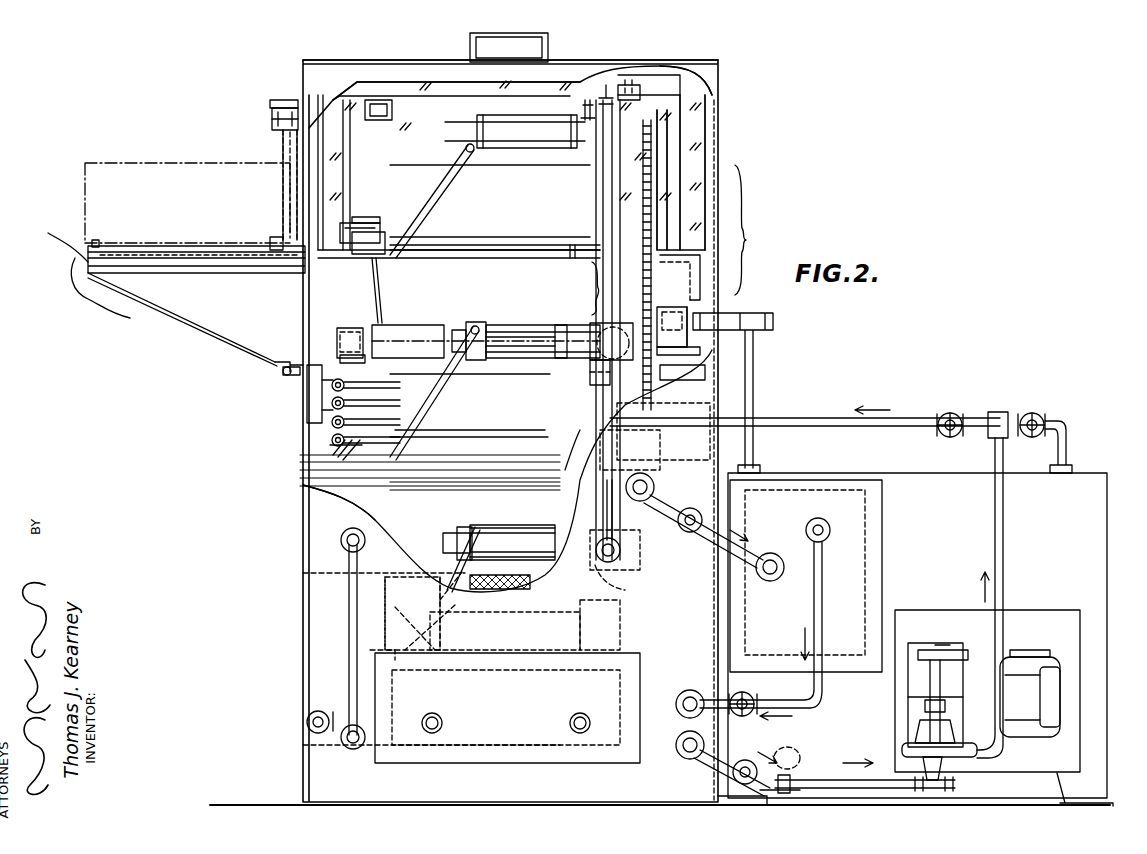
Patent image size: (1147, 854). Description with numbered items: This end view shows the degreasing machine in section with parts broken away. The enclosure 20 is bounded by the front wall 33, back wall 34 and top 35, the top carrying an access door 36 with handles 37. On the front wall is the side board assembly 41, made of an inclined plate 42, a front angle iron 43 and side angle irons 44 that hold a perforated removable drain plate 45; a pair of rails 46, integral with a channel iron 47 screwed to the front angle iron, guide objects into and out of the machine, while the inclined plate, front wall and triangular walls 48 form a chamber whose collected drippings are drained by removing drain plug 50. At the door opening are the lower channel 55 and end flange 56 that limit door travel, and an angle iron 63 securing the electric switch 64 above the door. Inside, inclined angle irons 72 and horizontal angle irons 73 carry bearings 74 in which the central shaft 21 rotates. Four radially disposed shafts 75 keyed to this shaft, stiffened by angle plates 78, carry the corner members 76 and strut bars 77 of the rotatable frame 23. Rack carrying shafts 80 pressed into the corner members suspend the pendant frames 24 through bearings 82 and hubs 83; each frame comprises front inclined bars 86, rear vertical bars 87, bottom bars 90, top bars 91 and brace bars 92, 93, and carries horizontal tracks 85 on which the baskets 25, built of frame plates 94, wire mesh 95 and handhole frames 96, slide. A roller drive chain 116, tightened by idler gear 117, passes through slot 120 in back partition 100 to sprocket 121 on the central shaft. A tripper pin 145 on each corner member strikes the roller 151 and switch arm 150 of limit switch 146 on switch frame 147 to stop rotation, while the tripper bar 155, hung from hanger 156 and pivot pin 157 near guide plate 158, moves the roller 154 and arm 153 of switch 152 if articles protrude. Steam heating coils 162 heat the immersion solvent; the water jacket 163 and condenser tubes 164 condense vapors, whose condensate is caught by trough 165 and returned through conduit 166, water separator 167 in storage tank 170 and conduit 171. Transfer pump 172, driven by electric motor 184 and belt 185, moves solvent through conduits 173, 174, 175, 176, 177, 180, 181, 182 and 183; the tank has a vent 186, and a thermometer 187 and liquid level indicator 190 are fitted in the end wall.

The enclosure 20 is at (753, 230).
The central shaft 21 is at (440, 328).
The rotatable frame 23 is at (578, 288).
The pendant frames 24 is at (523, 528).
The baskets 25 is at (490, 328).
The front wall 33 is at (307, 392).
The back wall 34 is at (706, 148).
The top 35 is at (318, 62).
The access door 36 is at (365, 62).
The handles 37 is at (470, 46).
The side board assembly 41 is at (94, 288).
The inclined plate 42 is at (196, 330).
The front angle iron 43 is at (63, 237).
The side angle irons 44 is at (230, 273).
The perforated removable drain plate 45 is at (226, 258).
The rails 46 is at (165, 243).
The channel iron 47 is at (108, 243).
The triangular walls 48 is at (272, 340).
The drain plug 50 is at (283, 372).
The channel 55 is at (298, 252).
The end flange 56 is at (283, 152).
The angle iron 63 is at (283, 100).
The electric switch 64 is at (272, 118).
The inclined angle irons 72 is at (512, 317).
The horizontal angle irons 73 is at (345, 360).
The bearings 74 is at (350, 332).
The radially disposed shafts 75 is at (683, 325).
The corner members 76 is at (626, 132).
The strut bars 77 is at (698, 311).
The angle plates 78 is at (500, 325).
The rack carrying shafts 80 is at (520, 140).
The bearings 82 is at (465, 330).
The hubs 83 is at (472, 323).
The horizontal tracks 85 is at (432, 250).
The front inclined bars 86 is at (416, 488).
The rear vertical bars 87 is at (575, 252).
The bottom bars 90 is at (535, 250).
The top bars 91 is at (518, 330).
The brace bars 92 is at (460, 554).
The brace bars 93 is at (520, 628).
The rectangular frame plates 94 is at (430, 165).
The wire mesh 95 is at (600, 468).
The handhole frames 96 is at (428, 192).
The back partition 100 is at (690, 182).
The endless roller drive chain 116 is at (690, 277).
The idler gear 117 is at (668, 150).
The narrow slot 120 is at (660, 165).
The sprocket 121 is at (655, 436).
The tripper pin 145 is at (587, 100).
The spring-urged limit switch 146 is at (660, 85).
The switch frame 147 is at (700, 85).
The switch arm 150 is at (622, 90).
The roller 151 is at (603, 96).
The spring-urged switch 152 is at (385, 262).
The arm 153 is at (370, 226).
The roller 154 is at (365, 217).
The tripper bar 155 is at (350, 140).
The hanger 156 is at (392, 110).
The pivot pin 157 is at (400, 120).
The guide plate 158 is at (378, 295).
The steam heating coils 162 is at (570, 722).
The water jacket 163 is at (332, 428).
The condenser tubes 164 is at (340, 458).
The trough 165 is at (352, 505).
The conduit 166 is at (735, 531).
The water separator 167 is at (778, 556).
The storage tank 170 is at (920, 639).
The conduit 171 is at (814, 606).
The solvent transfer pump 172 is at (920, 746).
The conduit 173 is at (790, 764).
The conduit 174 is at (844, 755).
The conduit 175 is at (785, 792).
The conduit 176 is at (905, 790).
The conduit 177 is at (1003, 578).
The conduit 180 is at (1012, 420).
The conduit 181 is at (838, 420).
The conduit 182 is at (738, 768).
The conduit 183 is at (1064, 448).
The electric motor 184 is at (1029, 693).
The belt 185 is at (970, 656).
The vent 186 is at (756, 352).
The thermometer 187 is at (320, 711).
The liquid level indicator 190 is at (352, 612).